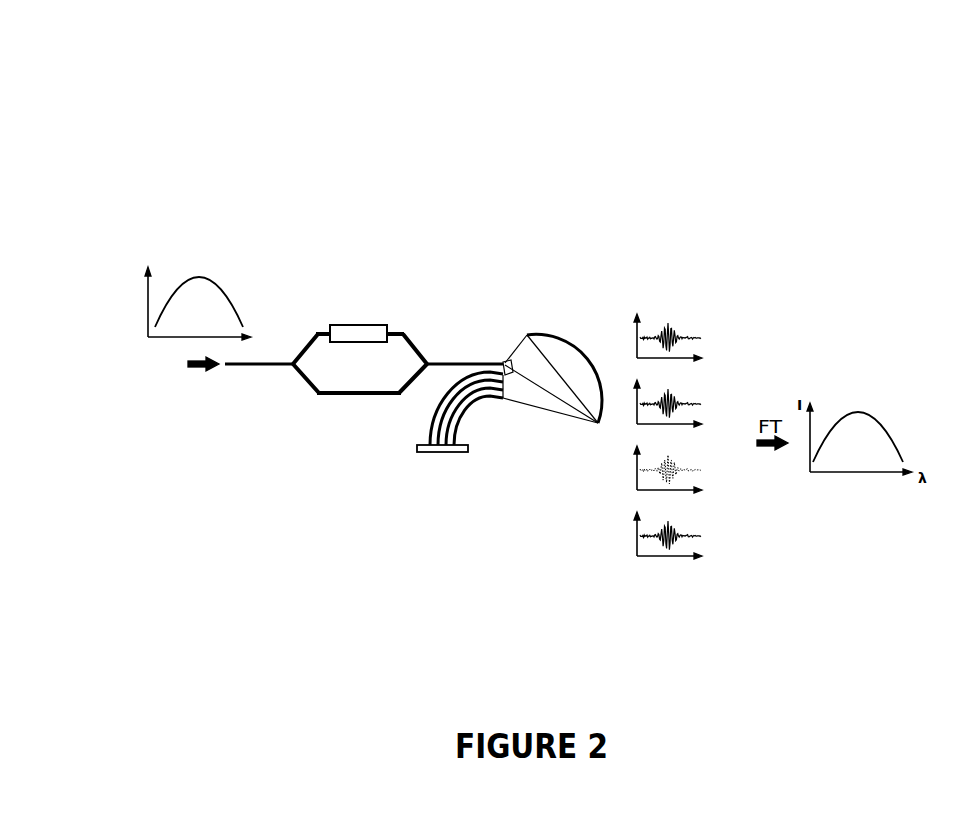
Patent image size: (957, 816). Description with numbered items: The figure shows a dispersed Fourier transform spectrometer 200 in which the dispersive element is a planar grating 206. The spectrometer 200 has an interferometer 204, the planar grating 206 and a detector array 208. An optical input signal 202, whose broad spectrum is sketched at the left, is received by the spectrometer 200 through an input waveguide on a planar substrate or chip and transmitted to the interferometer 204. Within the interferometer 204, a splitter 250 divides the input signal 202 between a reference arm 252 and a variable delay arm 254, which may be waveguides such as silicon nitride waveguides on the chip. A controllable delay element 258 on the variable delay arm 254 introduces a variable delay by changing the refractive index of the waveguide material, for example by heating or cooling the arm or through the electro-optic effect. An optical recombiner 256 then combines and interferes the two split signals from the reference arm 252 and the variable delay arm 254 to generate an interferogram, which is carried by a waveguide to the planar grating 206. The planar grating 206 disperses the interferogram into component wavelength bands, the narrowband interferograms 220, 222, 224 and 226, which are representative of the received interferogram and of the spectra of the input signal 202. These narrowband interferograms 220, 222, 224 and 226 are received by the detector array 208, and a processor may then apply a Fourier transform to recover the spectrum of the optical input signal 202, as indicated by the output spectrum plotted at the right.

The spectrometer 200 is at (438, 121).
The optical input signal 202 is at (254, 272).
The interferometer 204 is at (405, 335).
The planar grating 206 is at (568, 347).
The detector array 208 is at (460, 452).
The narrowband interferogram 220 is at (725, 331).
The narrowband interferogram 222 is at (724, 398).
The narrowband interferogram 224 is at (734, 478).
The narrowband interferogram 226 is at (734, 547).
The splitter 250 is at (293, 364).
The reference arm 252 is at (365, 394).
The variable delay arm 254 is at (310, 334).
The optical recombiner 256 is at (429, 362).
The controllable delay element 258 is at (354, 330).